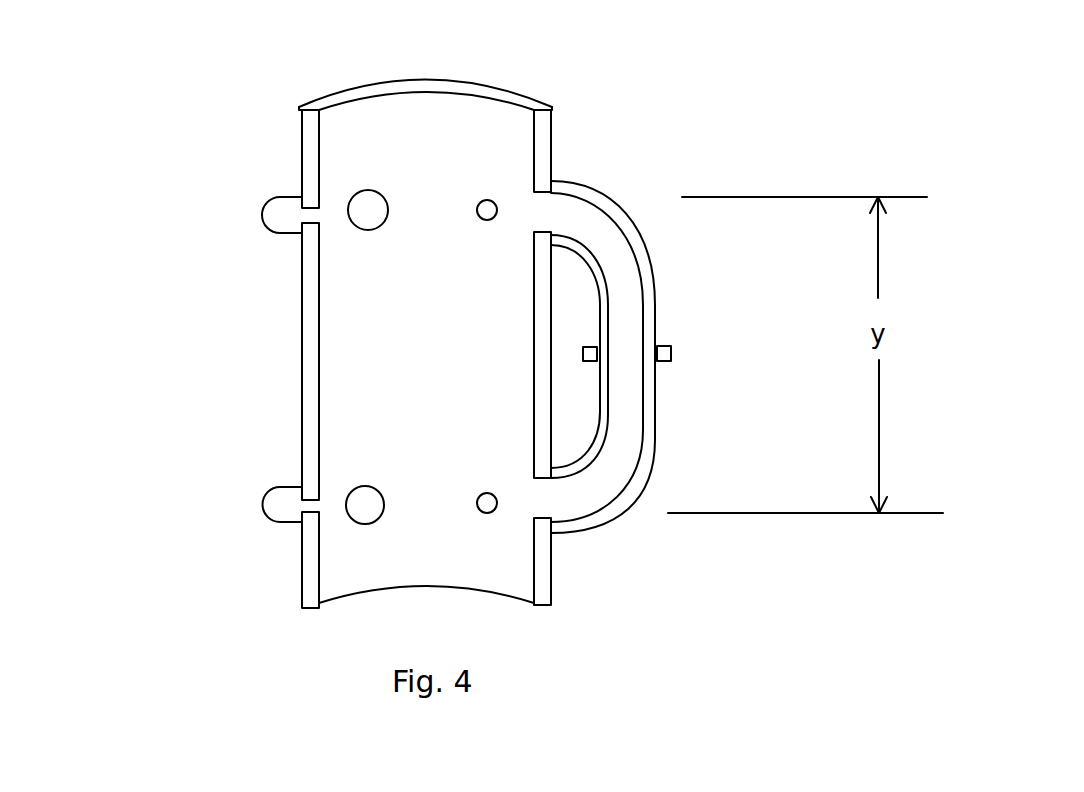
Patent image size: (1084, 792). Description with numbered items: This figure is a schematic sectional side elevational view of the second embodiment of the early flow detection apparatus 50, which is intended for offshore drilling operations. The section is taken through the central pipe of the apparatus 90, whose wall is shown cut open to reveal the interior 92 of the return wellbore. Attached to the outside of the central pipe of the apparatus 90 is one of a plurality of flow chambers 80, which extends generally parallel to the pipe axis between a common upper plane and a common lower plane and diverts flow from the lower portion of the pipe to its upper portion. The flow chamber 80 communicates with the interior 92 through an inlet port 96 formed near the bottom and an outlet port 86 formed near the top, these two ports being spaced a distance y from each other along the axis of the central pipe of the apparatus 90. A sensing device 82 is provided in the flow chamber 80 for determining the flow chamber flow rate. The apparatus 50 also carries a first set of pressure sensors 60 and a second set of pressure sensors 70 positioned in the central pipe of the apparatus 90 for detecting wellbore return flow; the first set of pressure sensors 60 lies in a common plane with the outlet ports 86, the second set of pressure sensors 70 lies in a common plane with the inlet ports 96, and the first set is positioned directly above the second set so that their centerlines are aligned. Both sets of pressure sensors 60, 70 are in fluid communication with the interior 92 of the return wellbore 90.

The early flow detection apparatus 50 is at (221, 106).
The first set of pressure sensors 60 is at (260, 212).
The second set of pressure sensors 70 is at (263, 505).
The flow chamber 80 is at (645, 258).
The sensing device 82 is at (672, 352).
The outlet port 86 is at (538, 218).
The central pipe of the apparatus 90 is at (543, 152).
The interior of the return wellbore 92 is at (482, 127).
The inlet port 96 is at (368, 506).